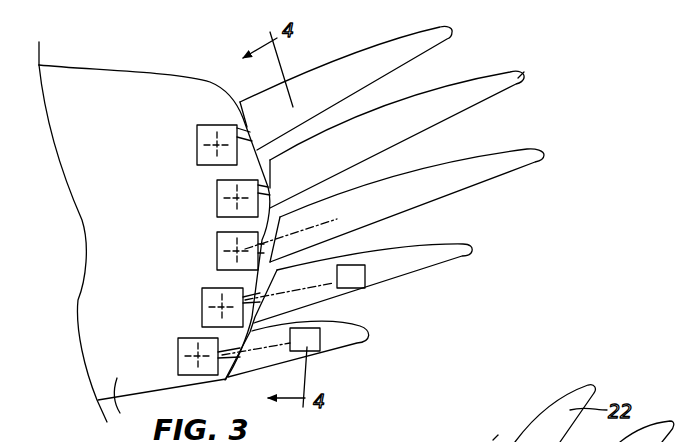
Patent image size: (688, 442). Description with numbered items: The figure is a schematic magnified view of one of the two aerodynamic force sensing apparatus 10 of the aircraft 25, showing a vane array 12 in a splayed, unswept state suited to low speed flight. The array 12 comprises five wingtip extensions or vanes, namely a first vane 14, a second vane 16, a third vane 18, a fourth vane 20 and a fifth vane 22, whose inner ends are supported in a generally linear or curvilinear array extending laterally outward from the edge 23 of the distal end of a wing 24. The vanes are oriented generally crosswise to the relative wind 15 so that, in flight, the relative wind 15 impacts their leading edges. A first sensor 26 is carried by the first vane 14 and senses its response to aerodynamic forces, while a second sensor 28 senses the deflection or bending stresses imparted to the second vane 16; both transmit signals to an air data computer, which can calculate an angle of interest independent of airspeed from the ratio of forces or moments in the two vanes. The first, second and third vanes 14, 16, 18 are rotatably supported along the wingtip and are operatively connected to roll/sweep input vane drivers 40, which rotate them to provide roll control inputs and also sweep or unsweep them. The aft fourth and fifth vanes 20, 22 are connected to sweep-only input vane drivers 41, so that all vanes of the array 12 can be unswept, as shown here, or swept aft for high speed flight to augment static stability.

The aerodynamic force sensing apparatus 10 is at (562, 143).
The vane array 12 is at (524, 71).
The first vane 14 is at (358, 338).
The relative wind 15 is at (355, 376).
The second vane 16 is at (428, 262).
The third vane 18 is at (465, 177).
The fourth vane 20 is at (470, 97).
The fifth vane 22 is at (413, 50).
The edge 23 is at (392, 233).
The wing 24 is at (162, 407).
The aircraft 25 is at (80, 344).
The first sensor 26 is at (297, 352).
The second sensor 28 is at (361, 285).
The roll/sweep input vane driver 40 is at (237, 251).
The sweep-only input vane driver 41 is at (217, 145).